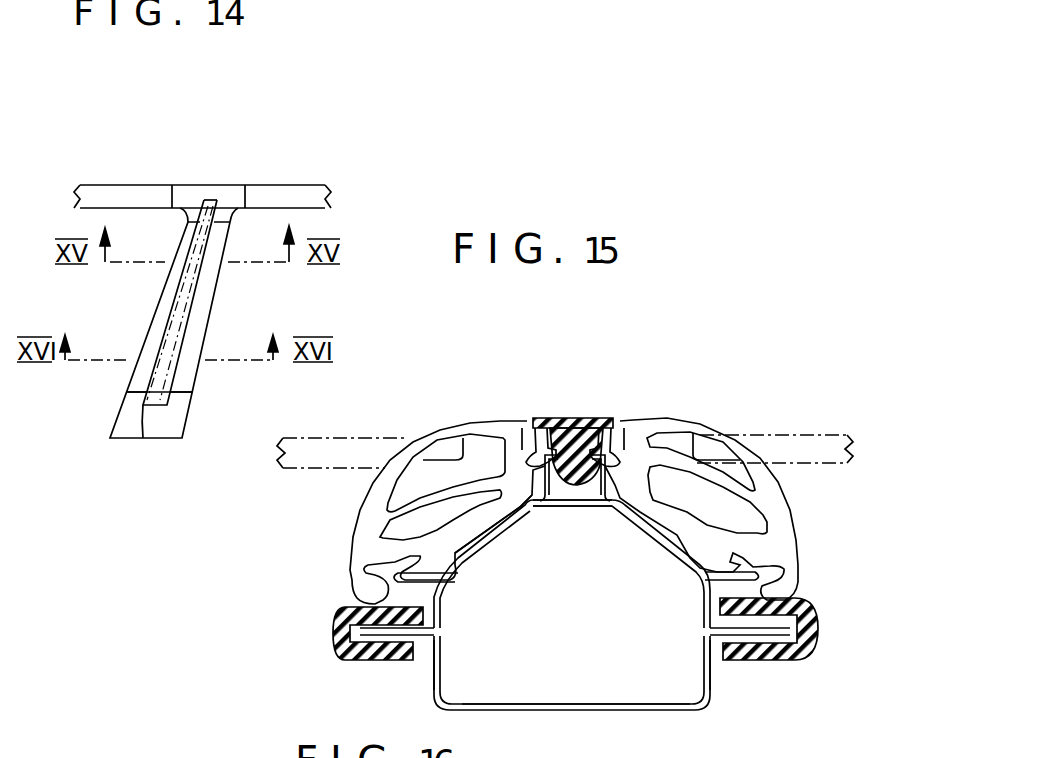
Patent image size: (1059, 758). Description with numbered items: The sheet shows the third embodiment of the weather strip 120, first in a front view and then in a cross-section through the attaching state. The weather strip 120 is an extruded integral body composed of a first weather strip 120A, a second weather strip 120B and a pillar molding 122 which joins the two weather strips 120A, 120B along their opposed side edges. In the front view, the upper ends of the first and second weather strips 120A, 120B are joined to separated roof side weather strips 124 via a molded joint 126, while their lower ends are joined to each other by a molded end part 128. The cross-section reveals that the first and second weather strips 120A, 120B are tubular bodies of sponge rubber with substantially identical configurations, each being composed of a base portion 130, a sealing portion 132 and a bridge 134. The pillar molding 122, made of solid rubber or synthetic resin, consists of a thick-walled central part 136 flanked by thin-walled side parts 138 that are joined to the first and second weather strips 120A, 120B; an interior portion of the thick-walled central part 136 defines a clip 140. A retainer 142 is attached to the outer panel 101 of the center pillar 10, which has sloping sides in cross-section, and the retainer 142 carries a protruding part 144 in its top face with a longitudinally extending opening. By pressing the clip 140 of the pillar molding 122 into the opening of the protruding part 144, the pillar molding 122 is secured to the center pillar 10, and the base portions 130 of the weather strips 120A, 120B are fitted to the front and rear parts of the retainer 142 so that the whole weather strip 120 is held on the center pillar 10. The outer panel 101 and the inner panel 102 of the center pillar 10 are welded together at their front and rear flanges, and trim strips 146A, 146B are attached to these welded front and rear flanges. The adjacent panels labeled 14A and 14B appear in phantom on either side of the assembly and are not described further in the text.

In FIG. 15, the center pillar 10 is at (428, 692).
In FIG. 15, the first panel 14A is at (363, 440).
In FIG. 15, the second panel 14B is at (780, 434).
In FIG. 15, the outer panel 101 is at (663, 548).
In FIG. 15, the inner panel 102 is at (617, 710).
In FIG. 14, the weather strip 120 is at (233, 330).
In FIG. 15, the weather strip 120 is at (330, 583).
In FIG. 14, the first weather strip 120A is at (153, 317).
In FIG. 15, the first weather strip 120A is at (353, 533).
In FIG. 14, the second weather strip 120B is at (213, 300).
In FIG. 15, the second weather strip 120B is at (796, 532).
In FIG. 14, the pillar molding 122 is at (143, 440).
In FIG. 15, the pillar molding 122 is at (622, 400).
In FIG. 14, the roof side weather strips 124 is at (122, 185).
In FIG. 14, the molded joint 126 is at (212, 185).
In FIG. 14, the molded end part 128 is at (113, 417).
In FIG. 15, the base portion 130 is at (470, 522).
In FIG. 15, the sealing portion 132 is at (478, 422).
In FIG. 15, the bridge 134 is at (425, 500).
In FIG. 15, the thick-walled central part 136 is at (582, 417).
In FIG. 15, the thin-walled side parts 138 is at (542, 418).
In FIG. 15, the clip 140 is at (572, 482).
In FIG. 15, the retainer 142 is at (532, 510).
In FIG. 15, the protruding part 144 is at (599, 482).
In FIG. 15, the trim strip 146A is at (333, 640).
In FIG. 15, the trim strip 146B is at (812, 643).